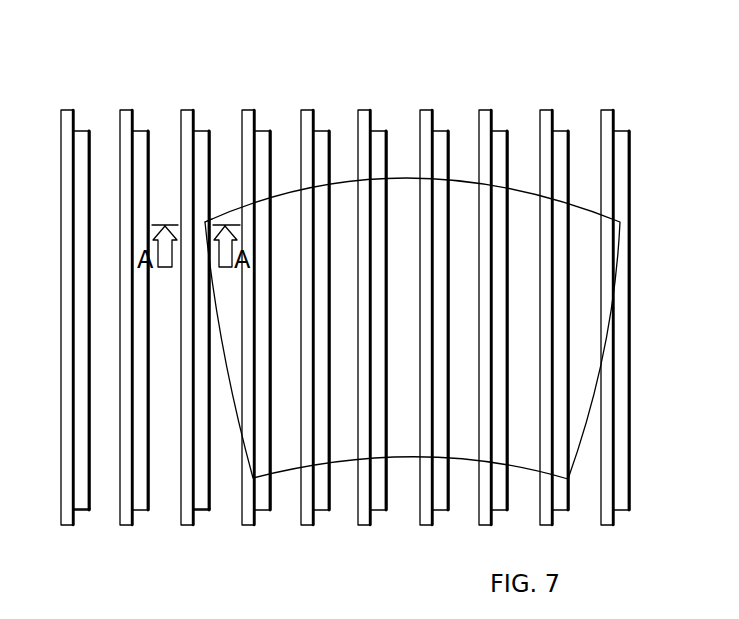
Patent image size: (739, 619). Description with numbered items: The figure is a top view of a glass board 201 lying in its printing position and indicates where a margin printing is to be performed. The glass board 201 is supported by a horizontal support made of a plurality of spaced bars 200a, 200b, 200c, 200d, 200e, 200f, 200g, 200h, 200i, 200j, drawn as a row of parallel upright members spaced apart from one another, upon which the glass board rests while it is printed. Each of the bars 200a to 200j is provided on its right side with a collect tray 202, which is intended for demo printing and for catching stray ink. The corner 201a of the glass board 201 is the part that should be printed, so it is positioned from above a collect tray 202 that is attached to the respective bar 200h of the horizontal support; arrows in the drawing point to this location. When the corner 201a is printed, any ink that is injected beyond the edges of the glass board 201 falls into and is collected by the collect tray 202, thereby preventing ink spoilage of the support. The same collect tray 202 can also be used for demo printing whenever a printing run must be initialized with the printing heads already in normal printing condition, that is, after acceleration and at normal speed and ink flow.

The spaced bar 200a is at (617, 115).
The spaced bar 200b is at (553, 117).
The spaced bar 200c is at (487, 118).
The spaced bar 200d is at (425, 117).
The spaced bar 200e is at (372, 117).
The spaced bar 200f is at (308, 117).
The spaced bar 200g is at (252, 117).
The spaced bar 200h is at (188, 117).
The spaced bar 200i is at (125, 117).
The spaced bar 200j is at (70, 118).
The glass board 201 is at (592, 297).
The corner of the glass board 201a is at (205, 222).
The collect tray 202 is at (80, 507).